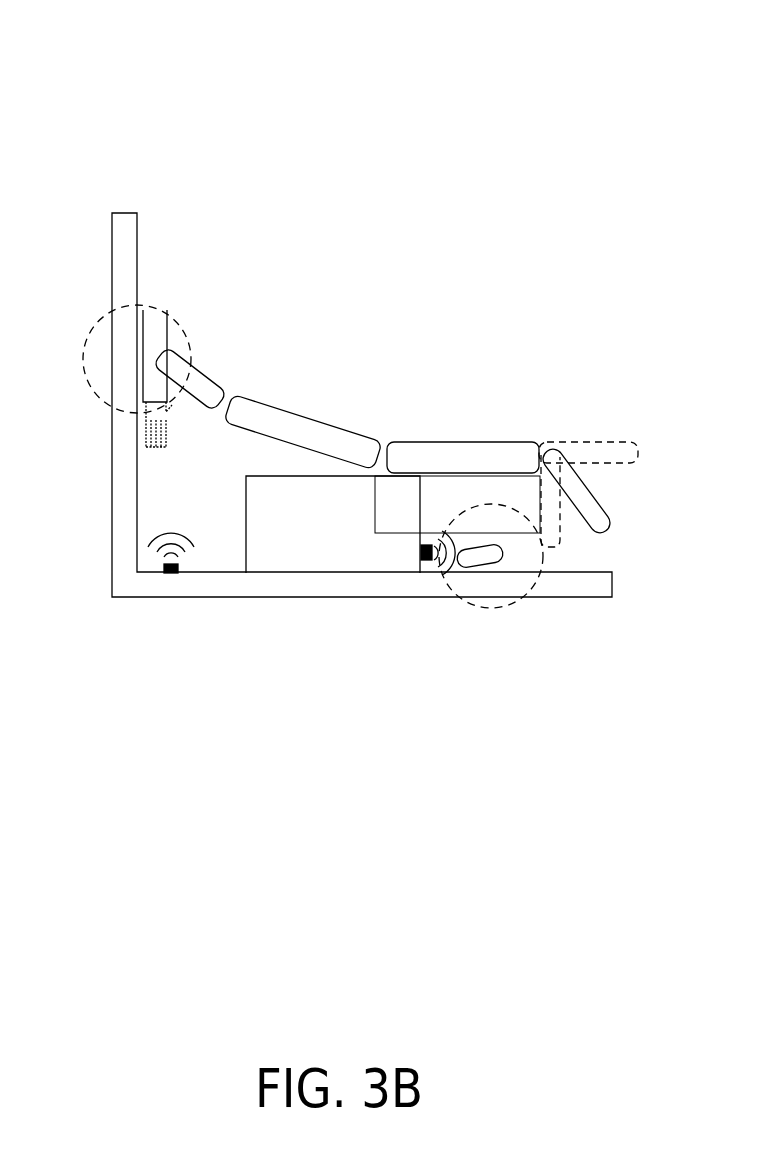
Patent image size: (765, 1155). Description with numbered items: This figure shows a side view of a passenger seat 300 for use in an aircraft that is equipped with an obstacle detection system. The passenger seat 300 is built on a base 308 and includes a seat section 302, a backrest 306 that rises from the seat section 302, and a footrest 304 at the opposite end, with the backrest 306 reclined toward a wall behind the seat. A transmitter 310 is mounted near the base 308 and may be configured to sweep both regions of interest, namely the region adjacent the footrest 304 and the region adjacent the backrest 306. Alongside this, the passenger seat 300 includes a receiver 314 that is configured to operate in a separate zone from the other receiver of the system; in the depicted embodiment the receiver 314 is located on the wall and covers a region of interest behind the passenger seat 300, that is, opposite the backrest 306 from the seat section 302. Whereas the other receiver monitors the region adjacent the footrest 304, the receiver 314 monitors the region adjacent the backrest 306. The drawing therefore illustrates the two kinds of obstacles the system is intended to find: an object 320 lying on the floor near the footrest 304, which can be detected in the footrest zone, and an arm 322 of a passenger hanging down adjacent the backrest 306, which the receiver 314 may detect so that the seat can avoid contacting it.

The passenger seat 300 is at (111, 135).
The seat section 302 is at (435, 452).
The footrest 304 is at (598, 447).
The backrest 306 is at (212, 380).
The base 308 is at (285, 598).
The transmitter 310 is at (425, 574).
The receiver 314 is at (168, 598).
The object 320 is at (494, 569).
The arm 322 is at (160, 320).